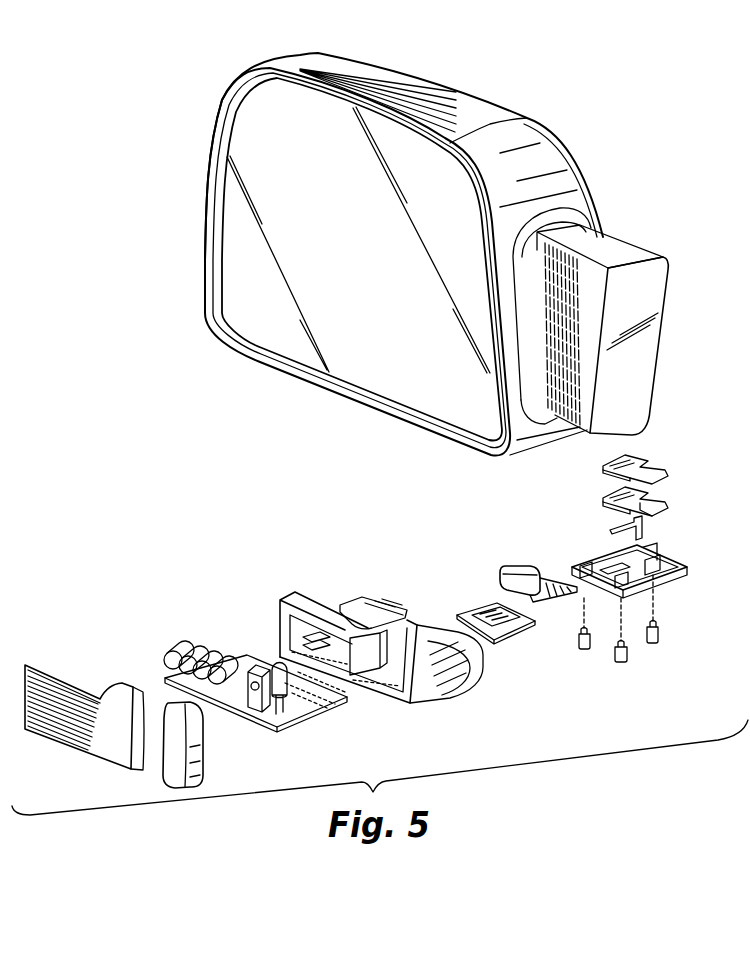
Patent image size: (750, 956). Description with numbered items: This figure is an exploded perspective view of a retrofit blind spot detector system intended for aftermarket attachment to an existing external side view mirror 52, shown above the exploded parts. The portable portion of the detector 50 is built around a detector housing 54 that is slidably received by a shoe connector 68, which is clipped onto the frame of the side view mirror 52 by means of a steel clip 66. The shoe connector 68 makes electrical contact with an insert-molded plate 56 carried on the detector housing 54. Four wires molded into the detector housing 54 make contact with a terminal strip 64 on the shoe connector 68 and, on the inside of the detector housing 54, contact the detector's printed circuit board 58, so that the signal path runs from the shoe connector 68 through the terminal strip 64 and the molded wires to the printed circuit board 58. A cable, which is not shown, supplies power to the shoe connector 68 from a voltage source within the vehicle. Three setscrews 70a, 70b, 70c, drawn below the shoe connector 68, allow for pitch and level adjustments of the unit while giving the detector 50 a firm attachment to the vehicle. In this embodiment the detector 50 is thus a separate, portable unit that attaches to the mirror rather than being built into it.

The detector 50 is at (4, 319).
The external side view mirror 52 is at (495, 120).
The detector housing 54 is at (322, 598).
The insert-molded plate 56 is at (383, 597).
The printed circuit board 58 is at (326, 708).
The terminal strip 64 is at (477, 603).
The steel clip 66 is at (515, 563).
The shoe connector 68 is at (694, 446).
The setscrew 70a is at (585, 650).
The setscrew 70b is at (620, 663).
The setscrew 70c is at (653, 645).